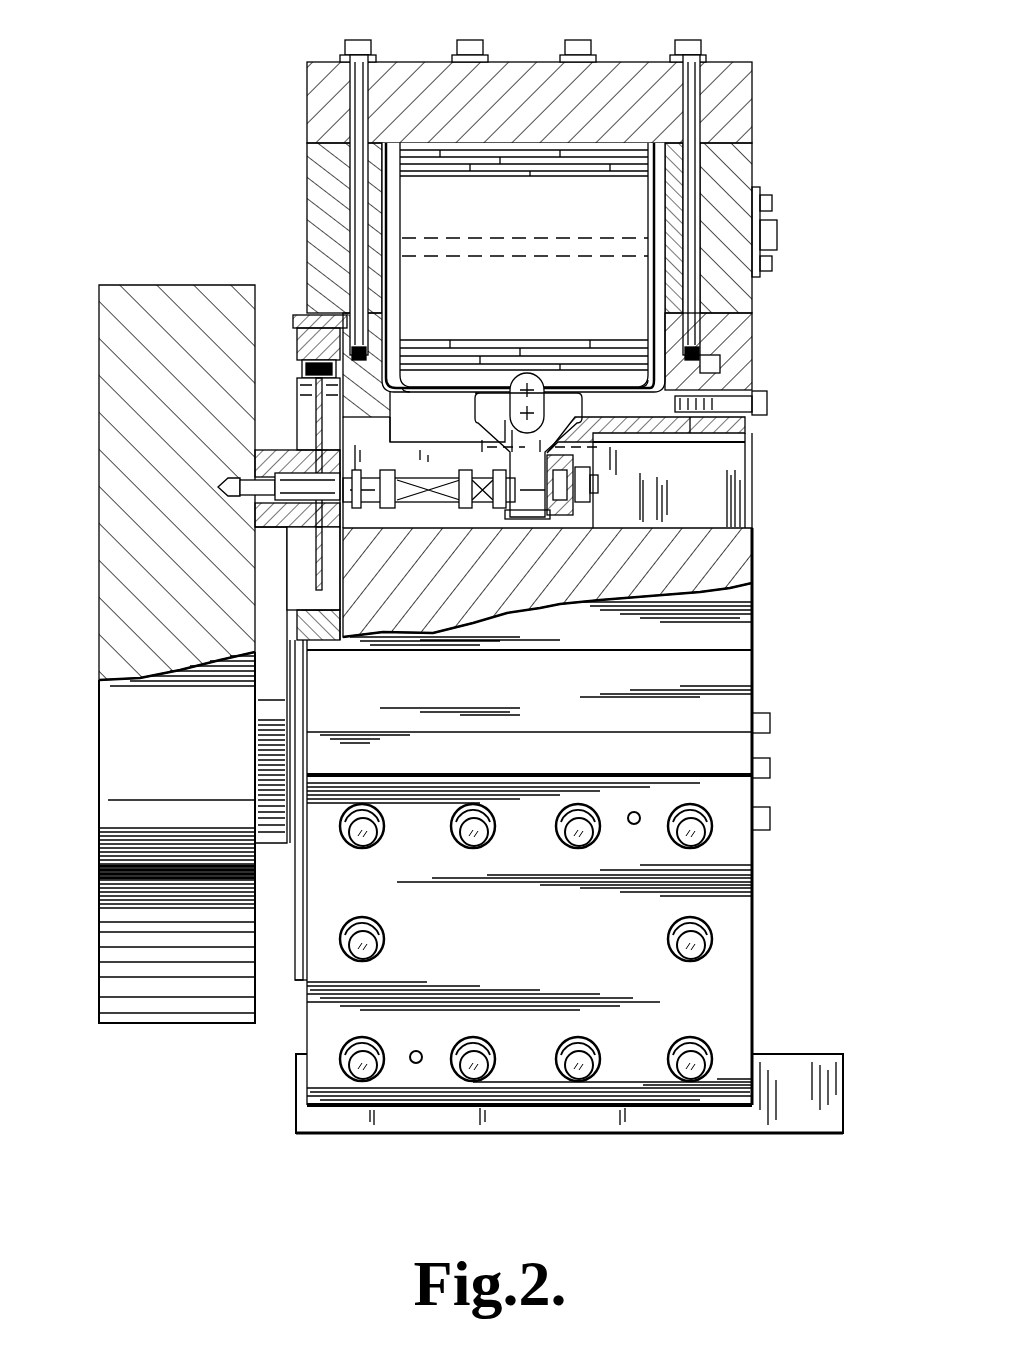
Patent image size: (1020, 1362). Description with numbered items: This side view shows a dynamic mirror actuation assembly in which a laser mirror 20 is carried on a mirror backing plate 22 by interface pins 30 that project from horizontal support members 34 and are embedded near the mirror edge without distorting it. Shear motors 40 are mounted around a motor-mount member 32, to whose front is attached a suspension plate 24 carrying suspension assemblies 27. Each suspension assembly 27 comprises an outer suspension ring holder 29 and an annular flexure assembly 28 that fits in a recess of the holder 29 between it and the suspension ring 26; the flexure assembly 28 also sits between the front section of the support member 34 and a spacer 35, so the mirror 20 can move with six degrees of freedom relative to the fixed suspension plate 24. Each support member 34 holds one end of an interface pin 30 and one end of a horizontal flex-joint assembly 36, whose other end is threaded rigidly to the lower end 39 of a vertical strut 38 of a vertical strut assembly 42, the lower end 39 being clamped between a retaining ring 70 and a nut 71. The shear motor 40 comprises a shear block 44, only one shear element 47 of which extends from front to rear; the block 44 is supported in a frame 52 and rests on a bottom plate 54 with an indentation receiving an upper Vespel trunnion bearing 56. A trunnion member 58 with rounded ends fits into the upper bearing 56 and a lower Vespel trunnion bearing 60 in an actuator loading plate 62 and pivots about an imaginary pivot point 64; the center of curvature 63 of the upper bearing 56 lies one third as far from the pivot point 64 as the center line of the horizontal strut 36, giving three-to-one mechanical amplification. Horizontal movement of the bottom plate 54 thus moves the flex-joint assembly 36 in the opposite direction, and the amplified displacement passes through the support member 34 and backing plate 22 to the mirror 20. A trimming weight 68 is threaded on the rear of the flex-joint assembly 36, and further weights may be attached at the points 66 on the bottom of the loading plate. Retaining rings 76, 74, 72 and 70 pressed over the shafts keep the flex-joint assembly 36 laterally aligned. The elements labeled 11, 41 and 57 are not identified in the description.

The support body 11 is at (752, 556).
The laser mirror 20 is at (99, 728).
The mirror backing plate 22 is at (280, 843).
The suspension plate 24 is at (300, 985).
The suspension ring 26 is at (295, 398).
The suspension assembly 27 is at (290, 305).
The flexure assembly 28 is at (293, 418).
The suspension ring holder 29 is at (293, 340).
The interface pin 30 is at (256, 457).
The motor-mount member 32 is at (752, 680).
The support member 34 is at (292, 530).
The spacer 35 is at (292, 560).
The flex-joint assembly 36 is at (441, 518).
The vertical strut 38 is at (487, 417).
The lower end of the vertical strut 39 is at (535, 520).
The shear motor 40 is at (770, 233).
The base plate 41 is at (795, 1054).
The vertical strut assembly 42 is at (600, 480).
The shear block 44 is at (640, 195).
The shear element 47 is at (425, 143).
The frame 52 is at (752, 92).
The bottom plate 54 is at (765, 393).
The upper Vespel trunnion bearing 56 is at (527, 378).
The block 57 is at (700, 347).
The trunnion member 58 is at (510, 440).
The lower Vespel trunnion bearing 60 is at (612, 470).
The actuator loading plate 62 is at (698, 437).
The center of curvature 63 is at (545, 395).
The pivot point 64 is at (485, 440).
The attachment points 66 is at (420, 392).
The weight 68 is at (587, 505).
The retaining ring 70 is at (500, 510).
The nut 71 is at (565, 520).
The rear retaining ring 72 is at (465, 510).
The second retaining ring 74 is at (388, 510).
The first retaining ring 76 is at (356, 510).